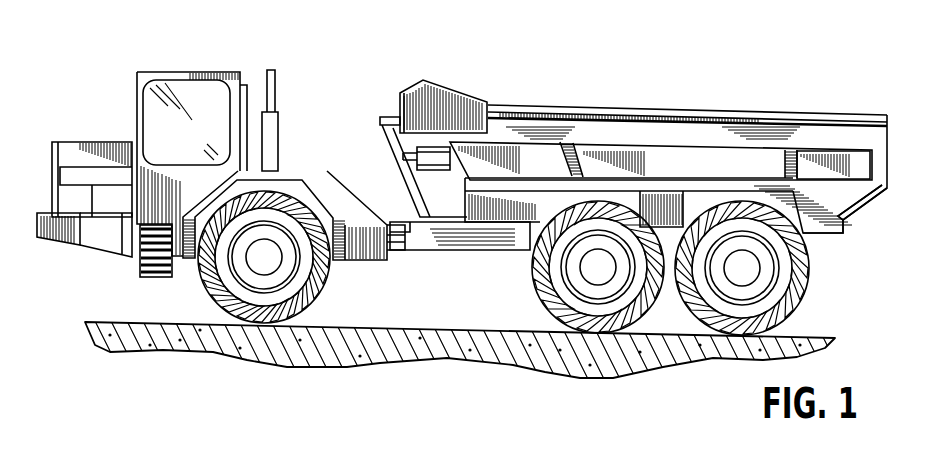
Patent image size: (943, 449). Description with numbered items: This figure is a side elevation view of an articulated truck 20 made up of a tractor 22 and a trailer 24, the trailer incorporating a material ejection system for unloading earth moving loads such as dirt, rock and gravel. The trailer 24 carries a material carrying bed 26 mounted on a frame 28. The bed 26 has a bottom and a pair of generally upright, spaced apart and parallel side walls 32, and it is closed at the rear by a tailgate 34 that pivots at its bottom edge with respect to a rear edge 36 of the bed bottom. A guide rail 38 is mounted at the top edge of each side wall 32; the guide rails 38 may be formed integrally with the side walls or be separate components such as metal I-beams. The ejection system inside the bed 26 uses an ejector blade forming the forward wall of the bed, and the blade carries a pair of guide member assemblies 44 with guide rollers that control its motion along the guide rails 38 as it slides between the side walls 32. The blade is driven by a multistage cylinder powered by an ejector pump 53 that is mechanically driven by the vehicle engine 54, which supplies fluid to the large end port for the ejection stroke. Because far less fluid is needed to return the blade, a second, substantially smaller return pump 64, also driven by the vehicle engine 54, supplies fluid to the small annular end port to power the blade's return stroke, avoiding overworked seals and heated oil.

The articulated truck 20 is at (305, 42).
The tractor 22 is at (70, 110).
The trailer 24 is at (637, 78).
The material carrying bed 26 is at (836, 112).
The frame 28 is at (470, 252).
The side walls 32 is at (772, 178).
The tailgate 34 is at (857, 208).
The rear edge 36 is at (845, 228).
The guide rails 38 is at (382, 117).
The guide member assemblies 44 is at (418, 80).
The ejector pump 53 is at (122, 258).
The vehicle engine 54 is at (122, 172).
The return pump 64 is at (75, 243).